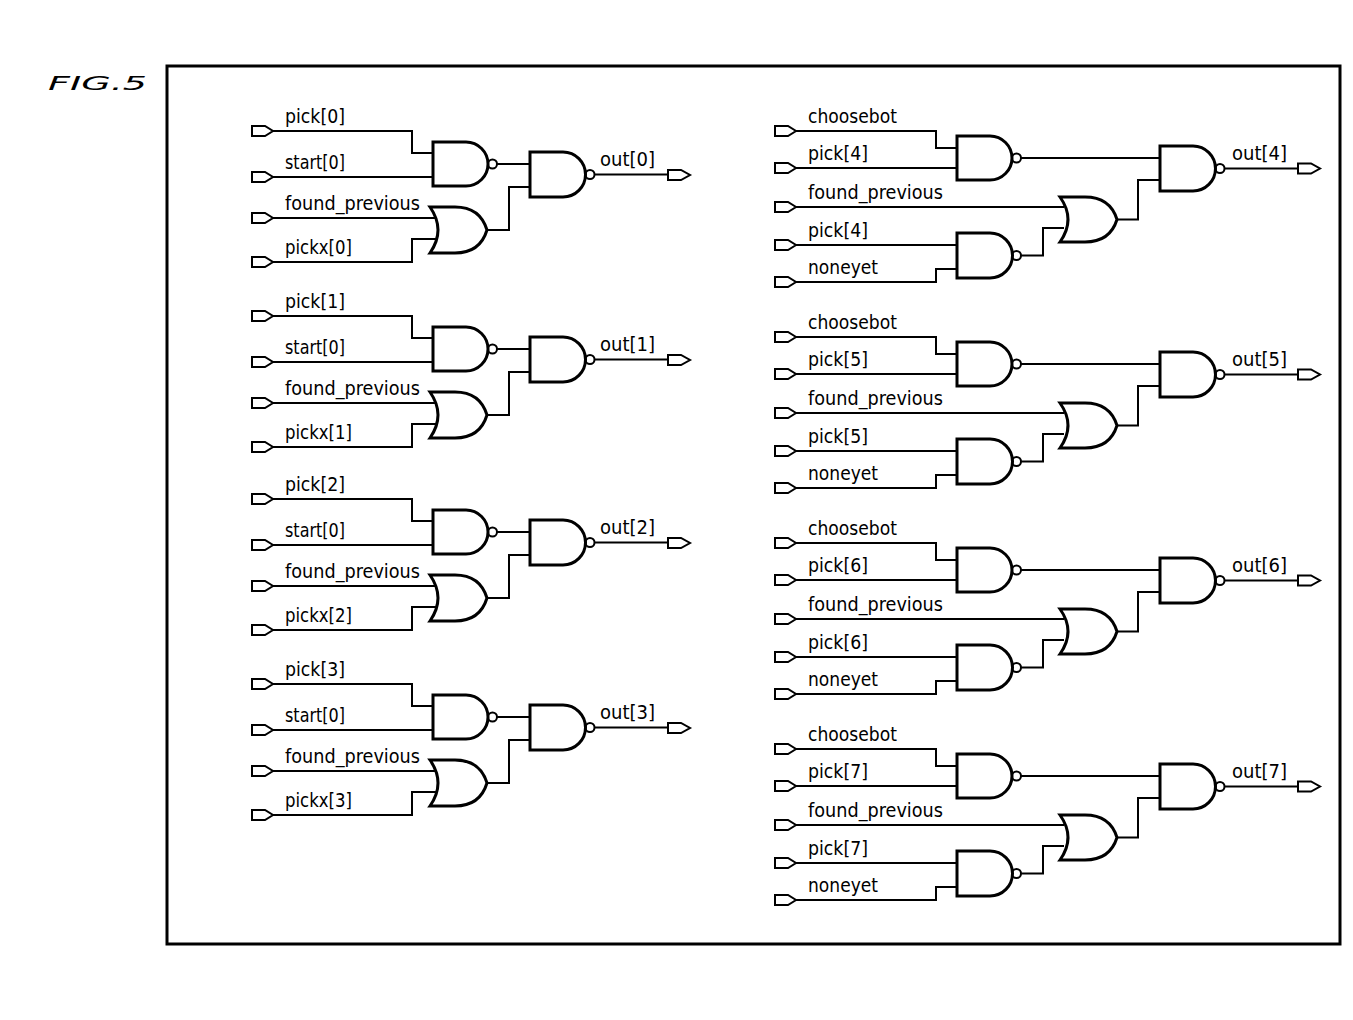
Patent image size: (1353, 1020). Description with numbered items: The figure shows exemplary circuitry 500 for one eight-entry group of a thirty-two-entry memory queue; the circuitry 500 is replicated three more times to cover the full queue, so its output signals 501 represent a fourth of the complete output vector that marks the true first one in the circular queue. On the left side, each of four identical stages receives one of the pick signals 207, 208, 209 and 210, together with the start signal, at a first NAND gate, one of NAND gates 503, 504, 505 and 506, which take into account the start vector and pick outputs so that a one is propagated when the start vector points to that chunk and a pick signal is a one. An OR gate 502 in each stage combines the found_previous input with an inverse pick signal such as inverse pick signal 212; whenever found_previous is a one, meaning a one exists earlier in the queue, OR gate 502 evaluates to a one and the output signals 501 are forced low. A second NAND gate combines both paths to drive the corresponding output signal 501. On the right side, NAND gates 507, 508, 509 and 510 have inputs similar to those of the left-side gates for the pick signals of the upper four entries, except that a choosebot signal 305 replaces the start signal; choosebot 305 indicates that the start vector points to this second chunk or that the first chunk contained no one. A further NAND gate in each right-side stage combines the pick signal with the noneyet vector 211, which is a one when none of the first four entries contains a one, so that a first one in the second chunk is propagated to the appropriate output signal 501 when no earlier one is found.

The circuitry 500 is at (166, 551).
The output signals 501 is at (613, 753).
The OR gate 502 is at (472, 251).
The NAND gate 503 is at (450, 141).
The NAND gate 504 is at (459, 322).
The NAND gate 505 is at (459, 505).
The NAND gate 506 is at (459, 690).
The NAND gate 507 is at (977, 136).
The NAND gate 508 is at (989, 336).
The NAND gate 509 is at (989, 542).
The NAND gate 510 is at (989, 748).
The pick[0] signal 207 is at (252, 131).
The pick[1] signal 208 is at (229, 305).
The pick[2] signal 209 is at (229, 511).
The pick[3] signal 210 is at (229, 695).
The noneyet vector 211 is at (775, 282).
The inverse pick signal 212 is at (252, 262).
The choosebot signal 305 is at (775, 131).